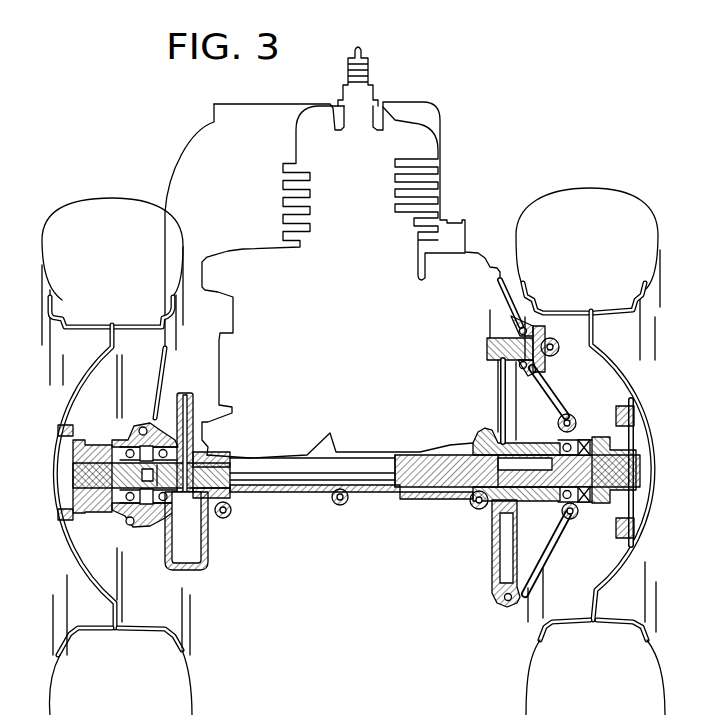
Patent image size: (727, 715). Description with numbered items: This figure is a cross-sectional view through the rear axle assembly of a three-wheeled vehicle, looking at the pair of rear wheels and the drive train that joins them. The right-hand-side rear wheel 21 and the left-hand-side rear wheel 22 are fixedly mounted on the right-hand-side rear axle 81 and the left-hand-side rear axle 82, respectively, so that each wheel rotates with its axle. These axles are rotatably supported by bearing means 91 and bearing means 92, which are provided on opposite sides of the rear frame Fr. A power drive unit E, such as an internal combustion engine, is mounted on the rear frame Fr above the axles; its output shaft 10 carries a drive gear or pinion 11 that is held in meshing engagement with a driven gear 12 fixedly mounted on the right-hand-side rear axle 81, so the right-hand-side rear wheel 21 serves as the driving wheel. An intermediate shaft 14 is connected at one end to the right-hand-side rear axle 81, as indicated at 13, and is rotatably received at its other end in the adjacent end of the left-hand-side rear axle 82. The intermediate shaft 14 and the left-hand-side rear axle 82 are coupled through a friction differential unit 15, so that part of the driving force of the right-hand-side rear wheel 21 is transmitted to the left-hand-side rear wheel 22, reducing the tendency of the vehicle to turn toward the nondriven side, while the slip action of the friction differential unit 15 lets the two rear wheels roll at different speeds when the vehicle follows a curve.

The power drive unit E is at (296, 146).
The rear frame Fr is at (165, 372).
The right-hand-side rear wheel 21 is at (588, 205).
The left-hand-side rear wheel 22 is at (114, 212).
The output shaft 10 is at (492, 350).
The drive gear or pinion 11 is at (492, 329).
The driven gear 12 is at (500, 399).
The connection of intermediate shaft to right rear axle 13 is at (475, 497).
The intermediate shaft 14 is at (360, 464).
The friction differential unit 15 is at (190, 566).
The right-hand-side rear axle 81 is at (546, 460).
The left-hand-side rear axle 82 is at (103, 458).
The bearing means 91 is at (566, 484).
The bearing means 92 is at (147, 515).